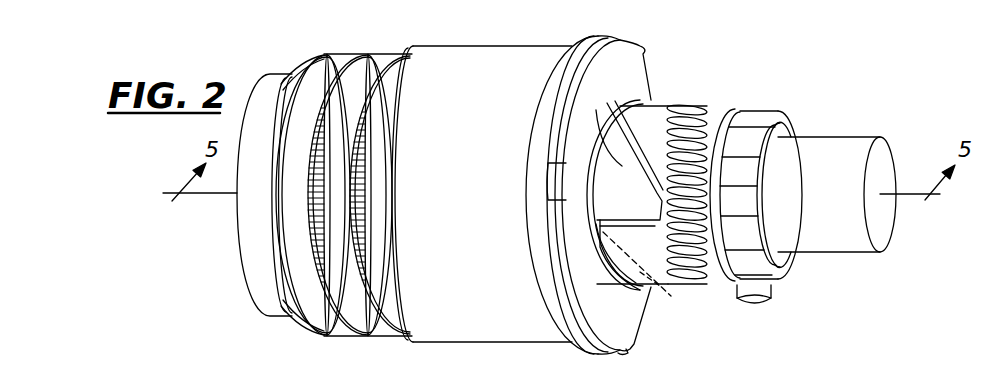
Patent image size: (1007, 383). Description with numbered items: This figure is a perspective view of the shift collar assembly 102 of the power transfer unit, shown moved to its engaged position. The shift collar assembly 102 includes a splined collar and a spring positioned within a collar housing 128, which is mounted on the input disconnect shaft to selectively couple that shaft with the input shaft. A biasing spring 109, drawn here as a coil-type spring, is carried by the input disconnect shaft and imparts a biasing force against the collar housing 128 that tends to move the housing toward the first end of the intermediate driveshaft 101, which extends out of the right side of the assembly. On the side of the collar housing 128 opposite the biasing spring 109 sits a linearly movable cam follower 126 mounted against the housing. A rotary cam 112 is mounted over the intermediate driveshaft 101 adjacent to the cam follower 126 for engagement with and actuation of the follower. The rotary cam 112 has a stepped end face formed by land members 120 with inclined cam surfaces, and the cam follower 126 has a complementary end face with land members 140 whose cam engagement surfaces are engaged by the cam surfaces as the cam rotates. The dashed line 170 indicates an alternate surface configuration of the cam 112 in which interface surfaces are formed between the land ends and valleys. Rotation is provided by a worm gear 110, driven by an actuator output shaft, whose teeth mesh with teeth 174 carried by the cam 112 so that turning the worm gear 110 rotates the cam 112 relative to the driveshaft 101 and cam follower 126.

The intermediate driveshaft 101 is at (860, 255).
The shift collar assembly 102 is at (876, 92).
The biasing spring 109 is at (366, 50).
The worm gear 110 is at (772, 297).
The rotary cam 112 is at (688, 106).
The land member 120 is at (630, 266).
The cam follower 126 is at (652, 82).
The collar housing 128 is at (480, 46).
The land member 140 is at (598, 112).
The dashed line 170 is at (653, 278).
The teeth 174 is at (722, 104).